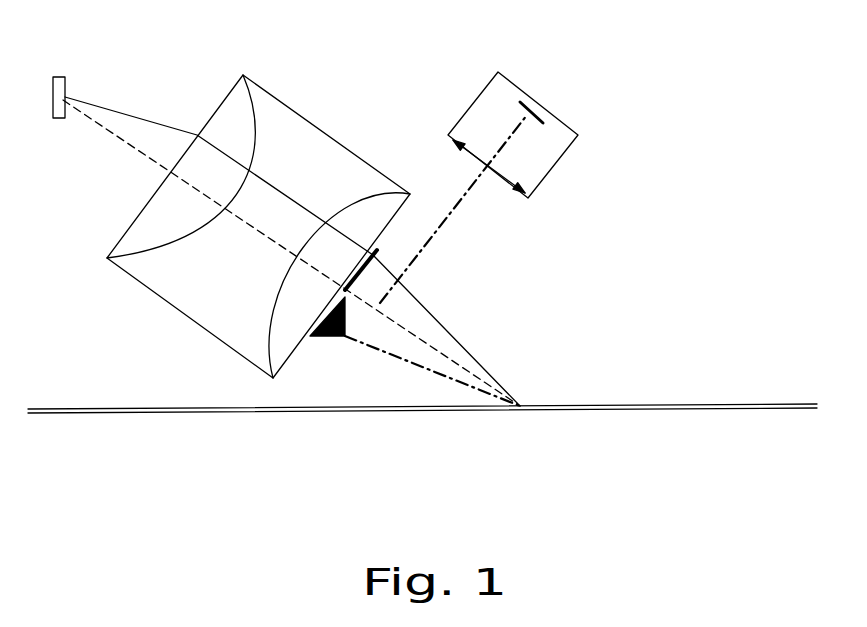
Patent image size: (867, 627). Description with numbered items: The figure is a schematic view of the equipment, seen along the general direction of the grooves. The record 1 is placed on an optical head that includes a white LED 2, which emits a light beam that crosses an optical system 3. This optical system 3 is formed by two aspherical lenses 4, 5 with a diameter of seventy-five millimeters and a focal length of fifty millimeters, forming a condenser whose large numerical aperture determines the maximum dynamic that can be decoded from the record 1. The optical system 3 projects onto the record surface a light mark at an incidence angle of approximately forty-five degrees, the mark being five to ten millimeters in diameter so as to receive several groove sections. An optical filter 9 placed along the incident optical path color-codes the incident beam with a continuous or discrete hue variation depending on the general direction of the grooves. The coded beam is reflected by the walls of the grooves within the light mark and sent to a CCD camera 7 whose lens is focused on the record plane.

The record 1 is at (422, 380).
The white LED 2 is at (95, 70).
The optical system 3 is at (258, 225).
The aspherical lens 4 is at (216, 157).
The aspherical lens 5 is at (276, 288).
The CCD camera 7 is at (535, 126).
The optical filter 9 is at (453, 209).